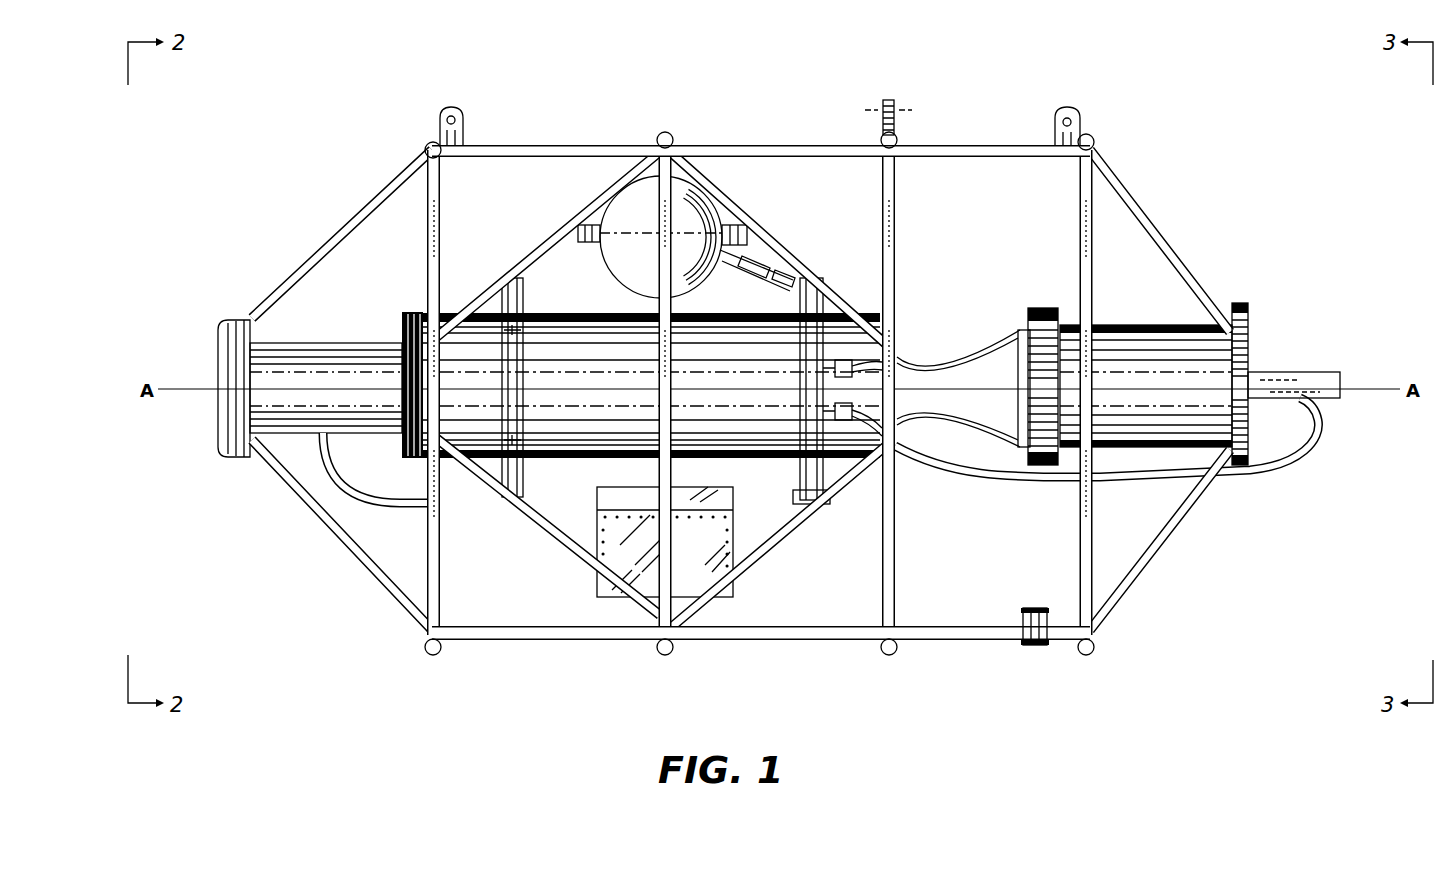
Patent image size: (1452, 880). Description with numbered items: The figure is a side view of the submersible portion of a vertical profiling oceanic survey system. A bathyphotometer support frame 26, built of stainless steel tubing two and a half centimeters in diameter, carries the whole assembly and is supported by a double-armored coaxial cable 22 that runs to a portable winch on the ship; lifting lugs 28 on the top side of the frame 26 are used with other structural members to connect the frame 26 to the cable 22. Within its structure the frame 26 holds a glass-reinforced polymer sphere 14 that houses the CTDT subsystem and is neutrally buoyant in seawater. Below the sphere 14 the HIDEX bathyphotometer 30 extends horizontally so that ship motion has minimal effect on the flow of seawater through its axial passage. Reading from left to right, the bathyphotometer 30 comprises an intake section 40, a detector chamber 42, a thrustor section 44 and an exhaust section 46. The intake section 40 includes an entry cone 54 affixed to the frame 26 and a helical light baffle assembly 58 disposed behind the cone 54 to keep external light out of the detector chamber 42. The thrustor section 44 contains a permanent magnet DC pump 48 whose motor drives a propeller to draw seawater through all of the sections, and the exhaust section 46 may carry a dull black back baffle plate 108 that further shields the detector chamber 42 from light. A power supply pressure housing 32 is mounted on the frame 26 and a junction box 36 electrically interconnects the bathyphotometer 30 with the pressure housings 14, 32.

The glass-reinforced polymer sphere 14 is at (690, 205).
The double-armored coaxial cable 22 is at (886, 346).
The bathyphotometer support frame 26 is at (560, 150).
The lifting lugs 28 is at (459, 110).
The HIDEX bathyphotometer 30 is at (930, 482).
The power supply pressure housing 32 is at (737, 425).
The junction box 36 is at (722, 604).
The intake section 40 is at (346, 293).
The detector chamber 42 is at (565, 330).
The thrustor section 44 is at (1045, 302).
The exhaust section 46 is at (1214, 290).
The permanent magnet DC pump 48 is at (972, 362).
The entry cone 54 is at (221, 322).
The helical light baffle assembly 58 is at (296, 433).
The back baffle plate 108 is at (1243, 340).